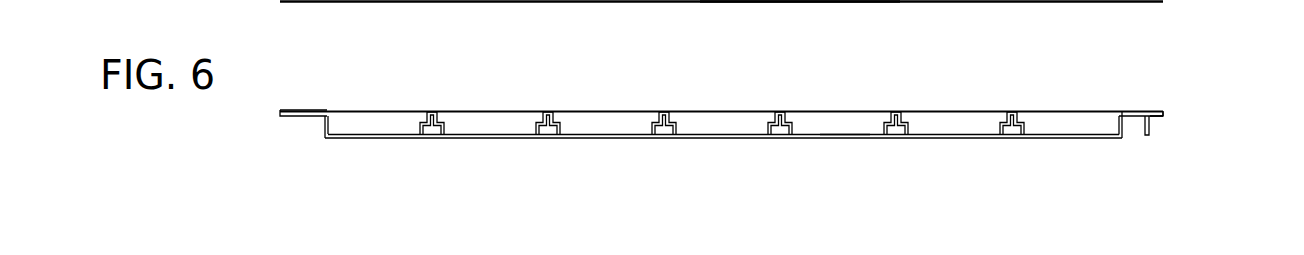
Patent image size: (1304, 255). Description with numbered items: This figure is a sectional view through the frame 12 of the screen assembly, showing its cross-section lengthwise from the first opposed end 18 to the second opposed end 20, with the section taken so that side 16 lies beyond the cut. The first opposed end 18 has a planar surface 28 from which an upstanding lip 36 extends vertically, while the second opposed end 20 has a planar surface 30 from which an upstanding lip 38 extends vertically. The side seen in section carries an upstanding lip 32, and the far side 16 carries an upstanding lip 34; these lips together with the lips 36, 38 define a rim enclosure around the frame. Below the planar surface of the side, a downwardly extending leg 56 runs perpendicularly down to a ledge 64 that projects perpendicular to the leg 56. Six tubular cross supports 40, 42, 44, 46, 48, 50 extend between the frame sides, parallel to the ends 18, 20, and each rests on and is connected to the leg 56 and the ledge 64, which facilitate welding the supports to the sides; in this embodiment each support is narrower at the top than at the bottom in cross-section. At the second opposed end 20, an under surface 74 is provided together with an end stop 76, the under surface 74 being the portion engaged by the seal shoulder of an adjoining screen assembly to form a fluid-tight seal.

The frame 12 is at (1212, 110).
The side 16 is at (779, 8).
The first opposed end 18 is at (703, 111).
The second opposed end 20 is at (1184, 120).
The planar surface 28 is at (323, 110).
The planar surface 30 is at (1136, 110).
The upstanding lip 32 is at (503, 112).
The upstanding lip 34 is at (603, 0).
The upstanding lip 36 is at (283, 110).
The upstanding lip 38 is at (1168, 113).
The tubular cross support 40 is at (431, 112).
The tubular cross support 42 is at (549, 112).
The tubular cross support 44 is at (663, 112).
The tubular cross support 46 is at (777, 112).
The tubular cross support 48 is at (894, 112).
The tubular cross support 50 is at (1013, 112).
The downwardly extending leg 56 is at (840, 121).
The ledge 64 is at (724, 138).
The under surface 74 is at (1168, 122).
The end stop 76 is at (1148, 128).